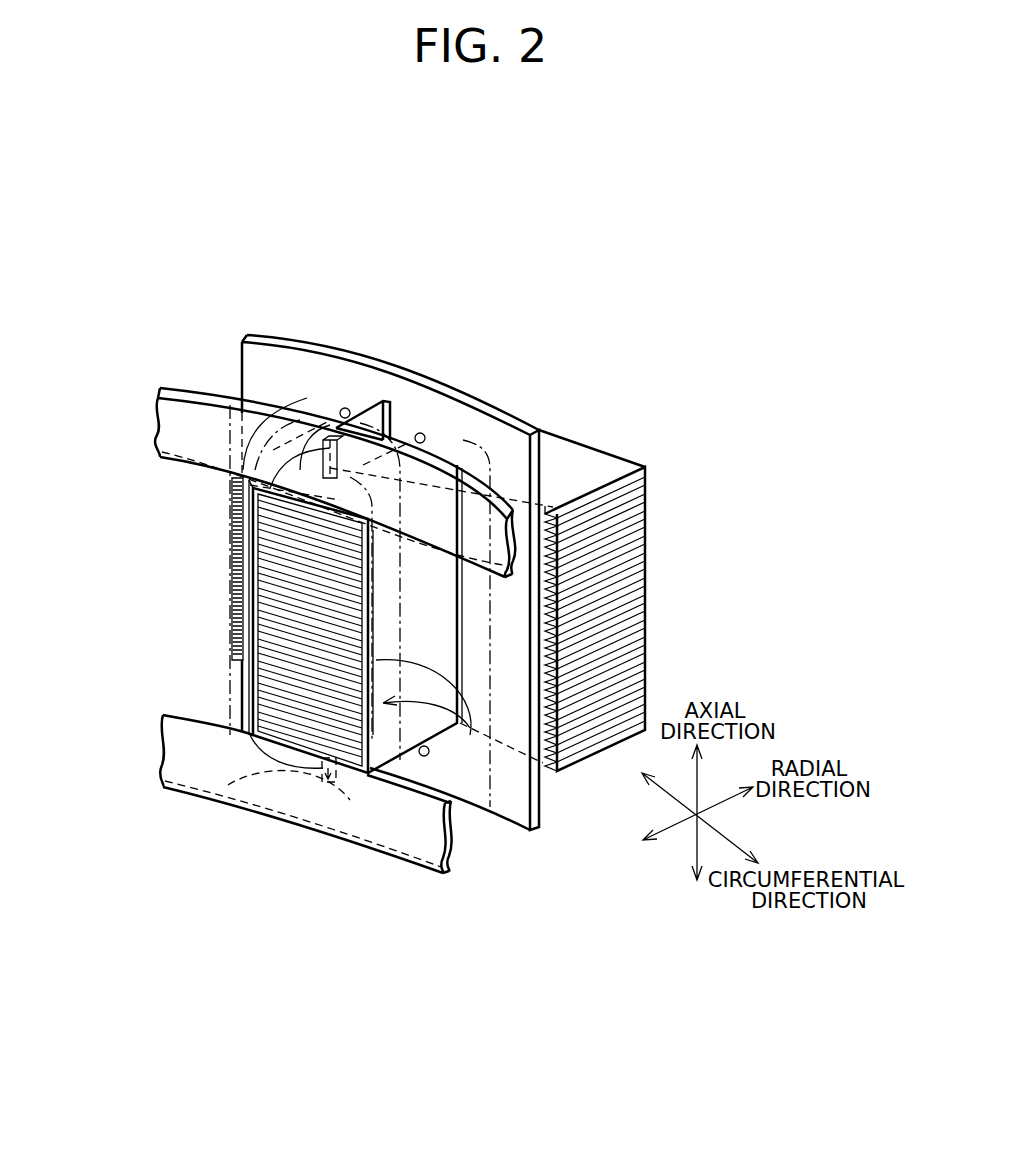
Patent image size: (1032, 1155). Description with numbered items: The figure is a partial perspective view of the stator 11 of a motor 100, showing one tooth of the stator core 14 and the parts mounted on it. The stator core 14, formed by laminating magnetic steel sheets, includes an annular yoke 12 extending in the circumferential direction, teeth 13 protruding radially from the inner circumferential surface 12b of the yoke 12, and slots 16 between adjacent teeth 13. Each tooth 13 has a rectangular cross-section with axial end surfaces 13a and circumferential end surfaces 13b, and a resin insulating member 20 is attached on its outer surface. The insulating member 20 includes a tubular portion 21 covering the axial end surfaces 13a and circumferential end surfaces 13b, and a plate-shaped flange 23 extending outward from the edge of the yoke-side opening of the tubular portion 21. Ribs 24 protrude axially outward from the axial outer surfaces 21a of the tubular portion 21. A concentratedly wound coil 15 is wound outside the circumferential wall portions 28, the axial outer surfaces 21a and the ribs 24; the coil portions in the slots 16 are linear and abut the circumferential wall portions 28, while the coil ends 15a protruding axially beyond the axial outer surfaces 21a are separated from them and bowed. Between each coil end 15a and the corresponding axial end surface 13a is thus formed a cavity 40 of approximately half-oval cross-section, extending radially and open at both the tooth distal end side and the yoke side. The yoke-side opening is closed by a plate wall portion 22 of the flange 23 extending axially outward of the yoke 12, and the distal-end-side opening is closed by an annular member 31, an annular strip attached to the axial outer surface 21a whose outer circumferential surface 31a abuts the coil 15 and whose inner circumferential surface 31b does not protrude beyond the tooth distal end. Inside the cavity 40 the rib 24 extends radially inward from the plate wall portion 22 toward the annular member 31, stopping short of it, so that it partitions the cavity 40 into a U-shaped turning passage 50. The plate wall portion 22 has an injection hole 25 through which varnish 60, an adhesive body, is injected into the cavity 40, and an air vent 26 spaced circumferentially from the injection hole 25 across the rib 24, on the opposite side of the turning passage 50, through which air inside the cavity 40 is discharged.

The motor 100 is at (701, 197).
The stator 11 is at (606, 206).
The annular yoke 12 is at (642, 431).
The inner circumferential surface 12b is at (545, 775).
The teeth 13 is at (300, 770).
The axial end surfaces 13a is at (250, 440).
The circumferential end surfaces 13b is at (230, 520).
The stator core 14 is at (597, 453).
The concentratedly wound coils 15 is at (227, 610).
The coil ends 15a is at (323, 768).
The slots 16 is at (182, 601).
The insulating members 20 is at (556, 850).
The tubular portion 21 is at (460, 780).
The axial outer surfaces 21a is at (275, 780).
The plate wall portion 22 is at (478, 522).
The plate-shaped flange 23 is at (545, 677).
The ribs 24 is at (372, 400).
The injection hole 25 is at (338, 440).
The air vent 26 is at (460, 463).
The circumferential wall portions 28 is at (478, 775).
The annular member 31 is at (182, 797).
The outer circumferential surface 31a is at (517, 520).
The inner circumferential surface 31b is at (482, 520).
The cavity 40 is at (363, 805).
The turning passage 50 is at (340, 804).
The varnish 60 is at (272, 338).